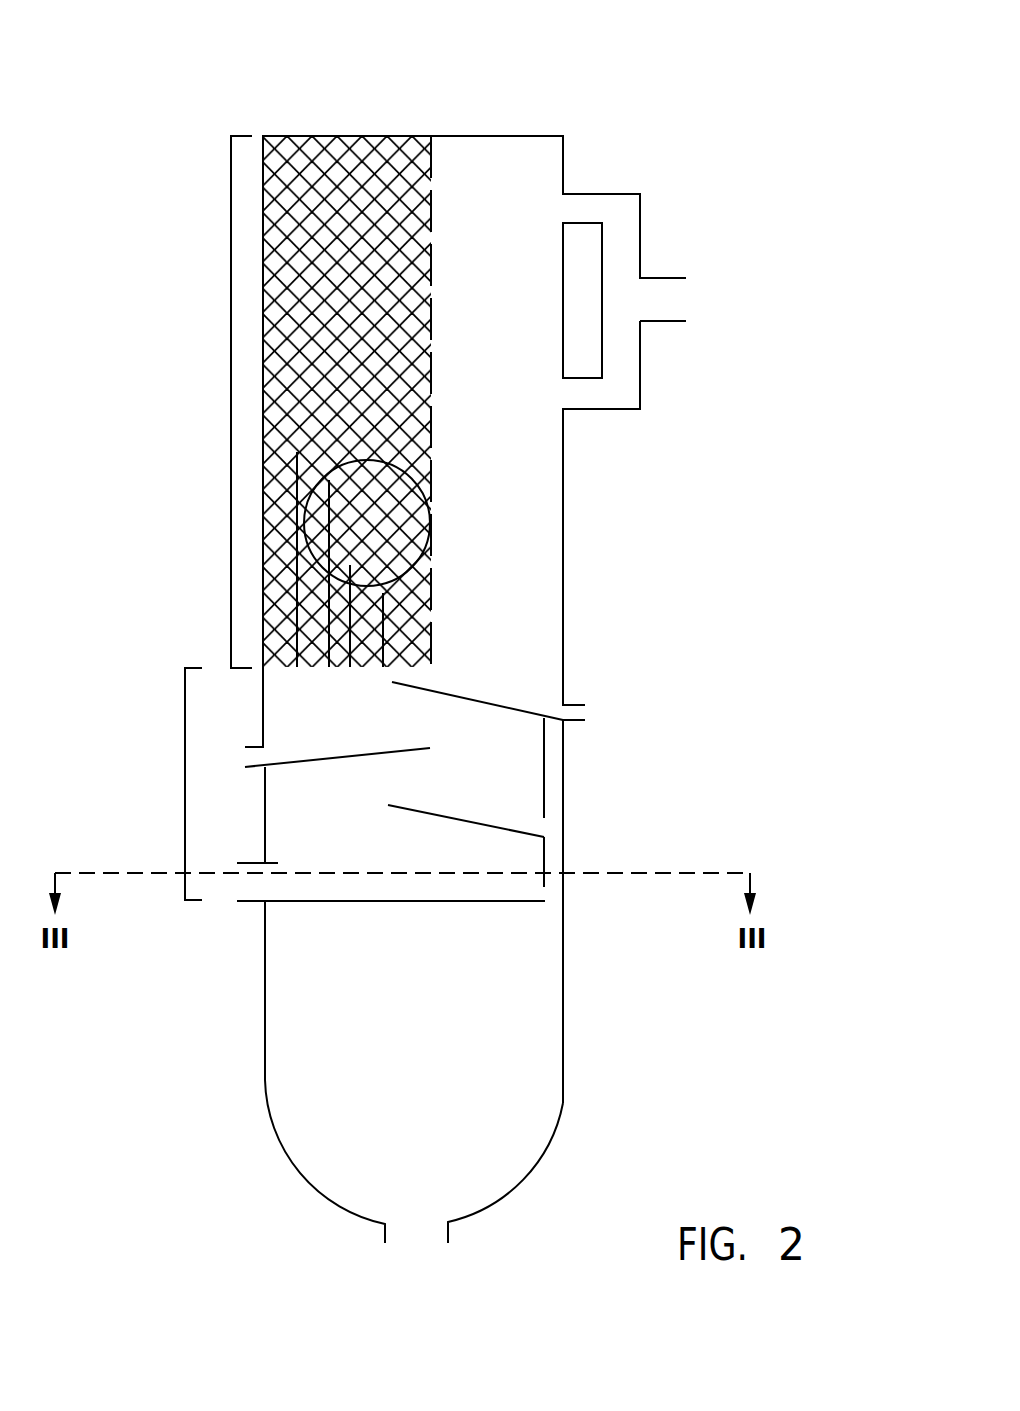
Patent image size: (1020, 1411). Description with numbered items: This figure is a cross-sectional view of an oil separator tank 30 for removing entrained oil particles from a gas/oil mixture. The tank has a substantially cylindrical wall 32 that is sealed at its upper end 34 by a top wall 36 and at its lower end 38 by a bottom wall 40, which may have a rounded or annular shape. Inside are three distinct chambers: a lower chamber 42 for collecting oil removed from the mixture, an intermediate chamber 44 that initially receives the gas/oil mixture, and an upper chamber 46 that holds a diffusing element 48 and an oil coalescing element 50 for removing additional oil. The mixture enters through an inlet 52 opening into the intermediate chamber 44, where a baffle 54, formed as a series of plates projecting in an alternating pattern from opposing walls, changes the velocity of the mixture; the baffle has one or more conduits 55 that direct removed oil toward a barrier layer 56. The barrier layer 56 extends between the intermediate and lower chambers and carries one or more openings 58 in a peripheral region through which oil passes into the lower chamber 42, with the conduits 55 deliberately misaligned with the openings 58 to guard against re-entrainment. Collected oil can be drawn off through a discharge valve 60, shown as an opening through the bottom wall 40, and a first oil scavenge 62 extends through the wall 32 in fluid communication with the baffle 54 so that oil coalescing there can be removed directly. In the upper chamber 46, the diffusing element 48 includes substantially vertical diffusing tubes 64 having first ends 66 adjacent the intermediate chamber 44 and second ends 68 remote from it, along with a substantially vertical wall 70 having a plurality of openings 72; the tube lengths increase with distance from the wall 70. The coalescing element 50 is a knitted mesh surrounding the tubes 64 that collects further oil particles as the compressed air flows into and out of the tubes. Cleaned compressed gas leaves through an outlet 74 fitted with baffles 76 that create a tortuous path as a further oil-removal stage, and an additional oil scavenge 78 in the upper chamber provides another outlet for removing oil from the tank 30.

The oil separator tank 30 is at (887, 67).
The cylindrical wall 32 is at (563, 497).
The upper end 34 is at (563, 162).
The top wall 36 is at (452, 136).
The lower end 38 is at (563, 1103).
The bottom wall 40 is at (293, 1163).
The lower chamber 42 is at (436, 1093).
The intermediate chamber 44 is at (185, 783).
The upper chamber 46 is at (231, 400).
The diffusing element 48 is at (428, 254).
The oil coalescing element 50 is at (408, 510).
The inlet 52 is at (257, 890).
The baffle 54 is at (440, 815).
The conduits 55 is at (545, 850).
The barrier layer 56 is at (402, 901).
The openings 58 is at (553, 895).
The discharge valve 60 is at (417, 1228).
The oil scavenge 62 is at (247, 756).
The diffusing tubes 64 is at (433, 467).
The first ends 66 is at (333, 668).
The second ends 68 is at (357, 440).
The substantially vertical wall 70 is at (430, 218).
The openings 72 is at (467, 297).
The outlet 74 is at (678, 303).
The baffles 76 is at (597, 358).
The oil scavenge 78 is at (587, 712).